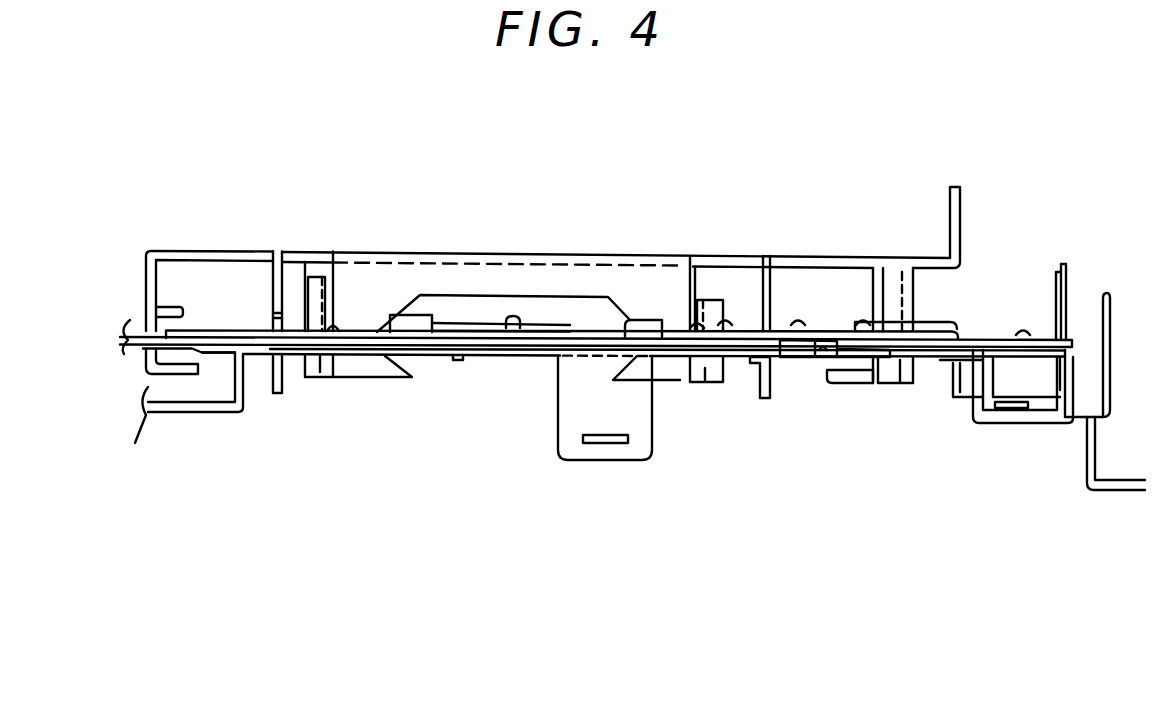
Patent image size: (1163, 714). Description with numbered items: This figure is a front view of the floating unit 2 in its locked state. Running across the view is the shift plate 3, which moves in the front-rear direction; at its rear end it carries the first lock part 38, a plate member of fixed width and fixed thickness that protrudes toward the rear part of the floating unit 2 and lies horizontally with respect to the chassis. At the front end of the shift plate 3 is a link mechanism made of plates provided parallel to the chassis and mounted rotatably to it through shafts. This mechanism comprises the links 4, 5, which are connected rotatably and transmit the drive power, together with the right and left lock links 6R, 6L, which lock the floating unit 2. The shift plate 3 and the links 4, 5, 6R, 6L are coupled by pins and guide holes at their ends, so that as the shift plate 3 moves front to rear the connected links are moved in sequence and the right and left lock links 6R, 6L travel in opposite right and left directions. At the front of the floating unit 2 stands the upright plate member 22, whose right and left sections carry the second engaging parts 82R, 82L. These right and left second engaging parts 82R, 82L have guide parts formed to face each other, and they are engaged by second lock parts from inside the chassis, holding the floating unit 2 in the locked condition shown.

The floating unit 2 is at (182, 251).
The shift plate 3 is at (1110, 323).
The link 4 is at (995, 338).
The link 5 is at (827, 327).
The left lock link 6L is at (292, 325).
The right lock link 6R is at (588, 325).
The upright plate member 22 is at (507, 280).
The first lock part 38 is at (905, 320).
The left second engaging part 82L is at (402, 368).
The right second engaging part 82R is at (623, 363).